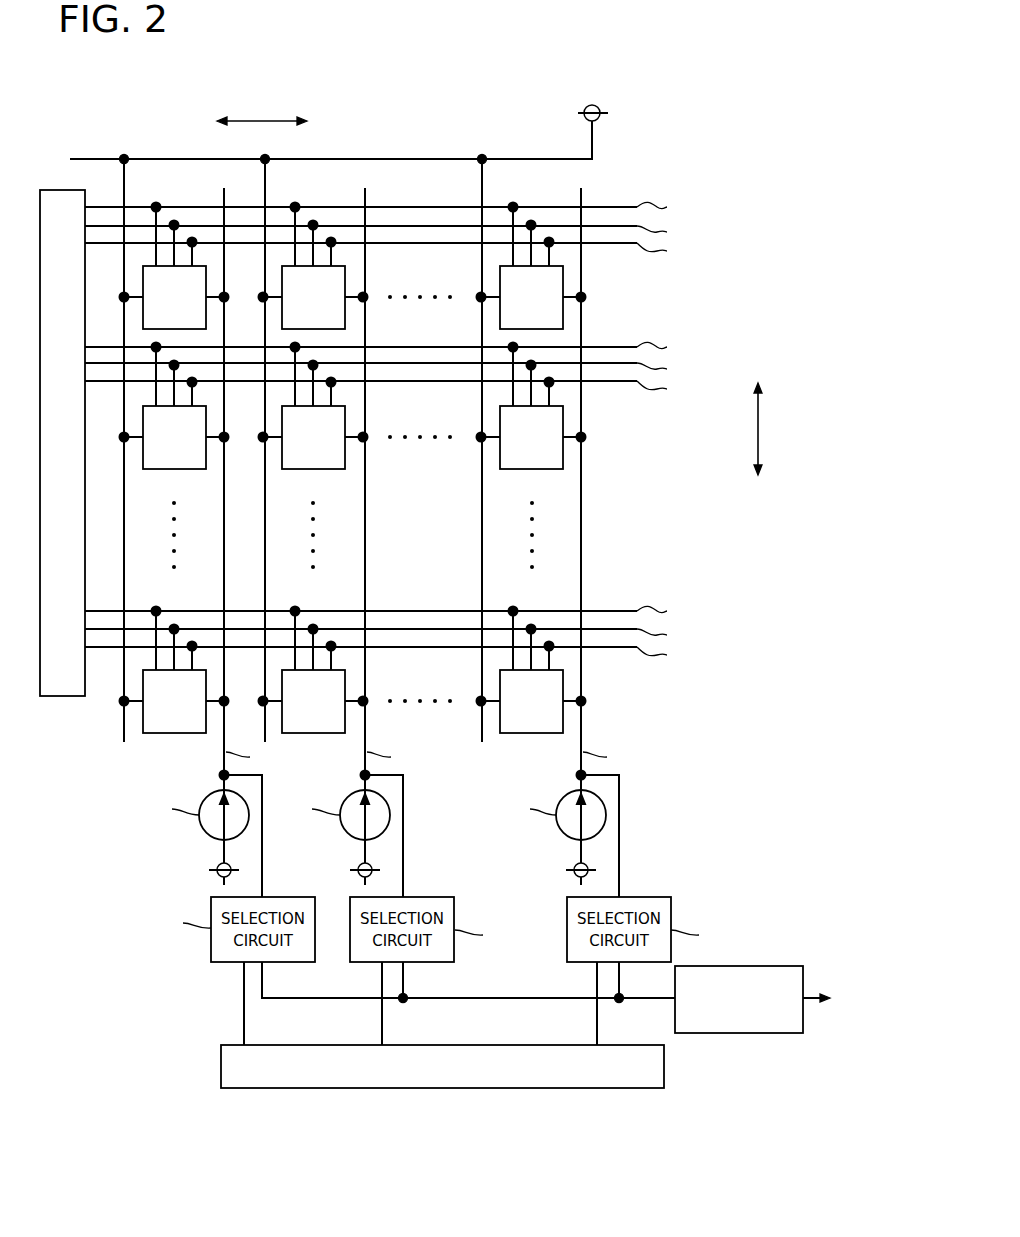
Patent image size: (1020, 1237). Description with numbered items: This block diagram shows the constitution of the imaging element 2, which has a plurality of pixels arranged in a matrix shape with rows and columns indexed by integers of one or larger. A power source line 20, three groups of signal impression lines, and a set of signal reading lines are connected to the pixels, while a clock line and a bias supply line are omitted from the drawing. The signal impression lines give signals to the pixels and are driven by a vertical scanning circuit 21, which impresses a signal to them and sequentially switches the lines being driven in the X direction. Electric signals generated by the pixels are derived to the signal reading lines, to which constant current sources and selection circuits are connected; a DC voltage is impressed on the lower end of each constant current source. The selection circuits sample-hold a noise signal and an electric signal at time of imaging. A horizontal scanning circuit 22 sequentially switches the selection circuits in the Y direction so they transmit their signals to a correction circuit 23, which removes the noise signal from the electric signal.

The imaging element 2 is at (635, 82).
The power source line 20 is at (522, 158).
The vertical scanning circuit 21 is at (63, 697).
The horizontal scanning circuit 22 is at (221, 1068).
The correction circuit 23 is at (742, 1034).